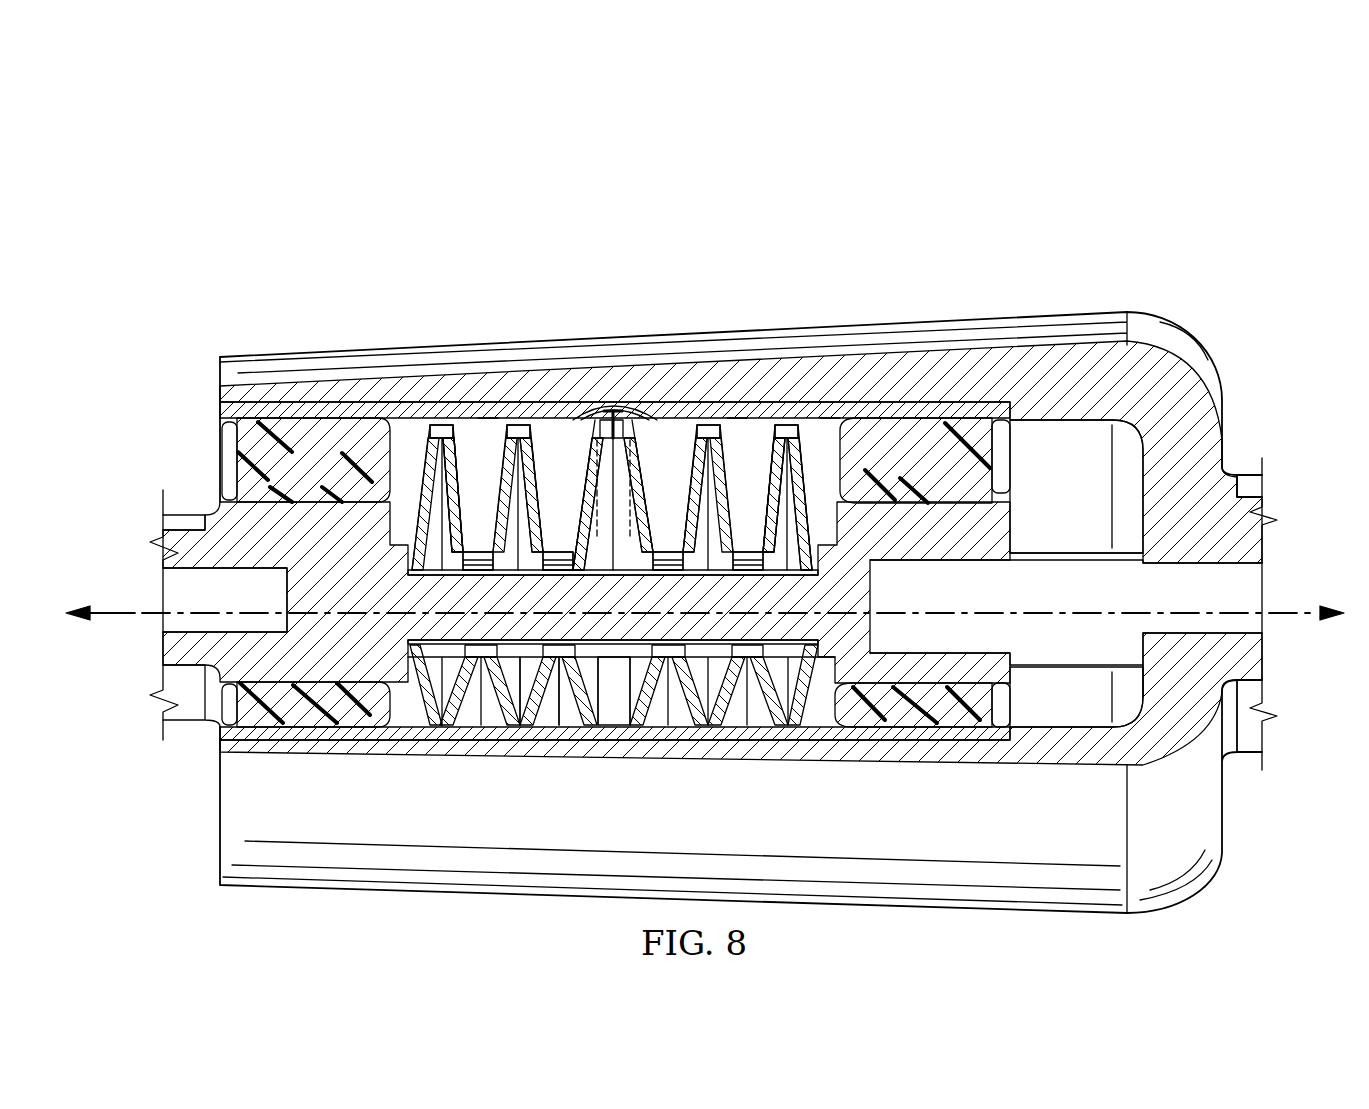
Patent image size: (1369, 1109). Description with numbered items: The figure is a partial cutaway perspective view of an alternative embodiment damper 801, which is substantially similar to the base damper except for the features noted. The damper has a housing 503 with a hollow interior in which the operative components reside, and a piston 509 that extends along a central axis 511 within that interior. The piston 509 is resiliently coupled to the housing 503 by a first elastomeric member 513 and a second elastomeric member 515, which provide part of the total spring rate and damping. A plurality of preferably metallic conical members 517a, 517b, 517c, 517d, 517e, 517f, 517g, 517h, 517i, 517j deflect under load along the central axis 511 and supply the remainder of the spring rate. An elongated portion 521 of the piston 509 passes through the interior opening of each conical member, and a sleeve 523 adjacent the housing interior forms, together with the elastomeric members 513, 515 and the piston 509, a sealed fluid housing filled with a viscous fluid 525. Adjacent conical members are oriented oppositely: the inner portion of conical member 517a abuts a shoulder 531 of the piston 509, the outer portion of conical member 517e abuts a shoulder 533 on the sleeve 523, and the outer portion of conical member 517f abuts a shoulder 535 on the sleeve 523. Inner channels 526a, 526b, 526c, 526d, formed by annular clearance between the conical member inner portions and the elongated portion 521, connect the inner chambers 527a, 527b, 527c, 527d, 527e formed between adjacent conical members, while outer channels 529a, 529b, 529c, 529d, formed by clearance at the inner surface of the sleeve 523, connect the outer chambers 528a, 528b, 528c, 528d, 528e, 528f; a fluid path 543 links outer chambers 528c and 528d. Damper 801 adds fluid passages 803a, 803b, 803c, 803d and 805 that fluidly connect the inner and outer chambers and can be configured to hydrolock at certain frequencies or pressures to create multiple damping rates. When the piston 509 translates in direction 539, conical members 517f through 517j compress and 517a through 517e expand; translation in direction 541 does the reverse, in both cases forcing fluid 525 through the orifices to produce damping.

The housing 503 is at (1223, 433).
The piston 509 is at (200, 713).
The central axis 511 is at (148, 612).
The first elastomeric member 513 is at (987, 443).
The second elastomeric member 515 is at (237, 442).
The conical member 517a is at (418, 468).
The conical member 517b is at (452, 512).
The conical member 517c is at (500, 445).
The conical member 517d is at (580, 420).
The conical member 517e is at (592, 440).
The conical member 517f is at (652, 445).
The conical member 517g is at (727, 548).
The conical member 517h is at (803, 540).
The conical member 517i is at (830, 493).
The conical member 517j is at (822, 440).
The elongated portion 521 is at (522, 660).
The sleeve 523 is at (670, 728).
The fluid 525 is at (628, 697).
The inner channel 526a is at (447, 573).
The inner channel 526b is at (527, 572).
The inner channel 526c is at (637, 565).
The inner channel 526d is at (777, 568).
The inner chamber 527a is at (413, 687).
The inner chamber 527b is at (500, 687).
The inner chamber 527c is at (590, 705).
The inner chamber 527d is at (707, 690).
The inner chamber 527e is at (793, 687).
The outer chamber 528a is at (414, 490).
The outer chamber 528b is at (452, 445).
The outer chamber 528c is at (552, 512).
The outer chamber 528d is at (692, 450).
The outer chamber 528e is at (772, 450).
The outer chamber 528f is at (842, 413).
The outer channel 529a is at (392, 345).
The outer channel 529b is at (488, 418).
The outer channel 529c is at (737, 420).
The outer channel 529d is at (830, 418).
The shoulder 531 is at (408, 533).
The shoulder 533 is at (605, 412).
The shoulder 535 is at (640, 418).
The direction 539 is at (105, 617).
The direction 541 is at (1300, 617).
The fluid path 543 is at (622, 418).
The damper 801 is at (955, 222).
The fluid passage 803a is at (443, 425).
The fluid passage 803b is at (518, 425).
The fluid passage 803c is at (708, 425).
The fluid passage 803d is at (787, 425).
The fluid passage 805 is at (613, 455).